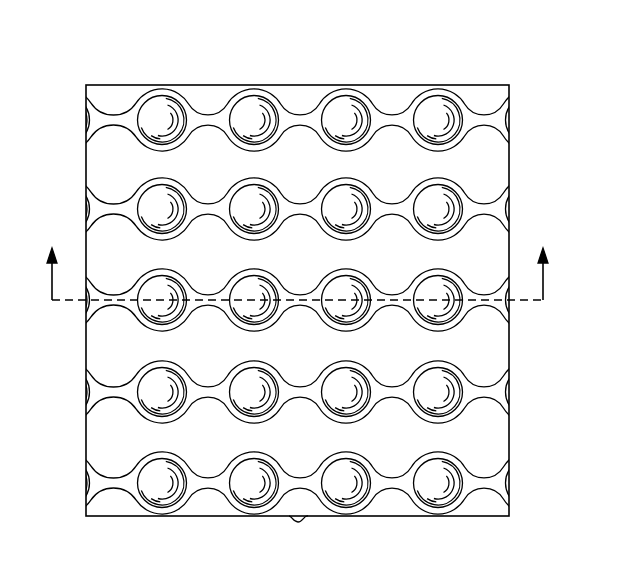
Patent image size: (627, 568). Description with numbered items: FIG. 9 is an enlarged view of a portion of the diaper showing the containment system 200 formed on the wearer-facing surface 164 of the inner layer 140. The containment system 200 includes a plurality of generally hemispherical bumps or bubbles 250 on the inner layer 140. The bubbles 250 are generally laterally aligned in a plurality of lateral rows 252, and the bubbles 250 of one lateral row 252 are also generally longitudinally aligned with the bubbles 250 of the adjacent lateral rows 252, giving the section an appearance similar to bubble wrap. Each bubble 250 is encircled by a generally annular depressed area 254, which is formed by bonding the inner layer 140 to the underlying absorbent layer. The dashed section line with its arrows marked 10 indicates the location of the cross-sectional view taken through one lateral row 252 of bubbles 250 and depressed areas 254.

The containment system 200 is at (110, 48).
The inner layer 140 is at (207, 92).
The bubbles 250 is at (257, 115).
The depressed area 254 is at (280, 100).
The lateral row 252 is at (515, 116).
The wearer-facing surface 164 is at (322, 262).
The section line for FIG. 10 is at (298, 258).